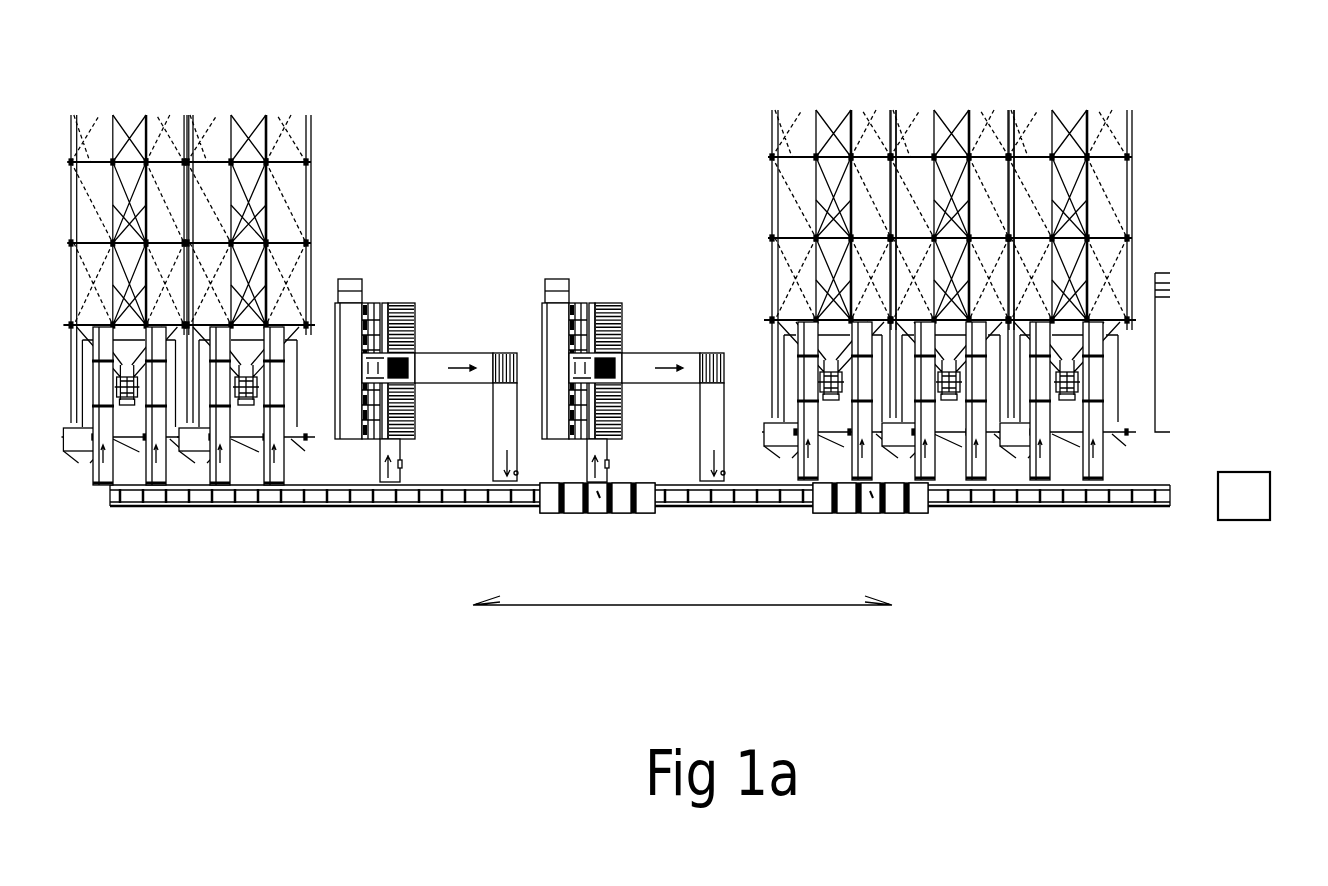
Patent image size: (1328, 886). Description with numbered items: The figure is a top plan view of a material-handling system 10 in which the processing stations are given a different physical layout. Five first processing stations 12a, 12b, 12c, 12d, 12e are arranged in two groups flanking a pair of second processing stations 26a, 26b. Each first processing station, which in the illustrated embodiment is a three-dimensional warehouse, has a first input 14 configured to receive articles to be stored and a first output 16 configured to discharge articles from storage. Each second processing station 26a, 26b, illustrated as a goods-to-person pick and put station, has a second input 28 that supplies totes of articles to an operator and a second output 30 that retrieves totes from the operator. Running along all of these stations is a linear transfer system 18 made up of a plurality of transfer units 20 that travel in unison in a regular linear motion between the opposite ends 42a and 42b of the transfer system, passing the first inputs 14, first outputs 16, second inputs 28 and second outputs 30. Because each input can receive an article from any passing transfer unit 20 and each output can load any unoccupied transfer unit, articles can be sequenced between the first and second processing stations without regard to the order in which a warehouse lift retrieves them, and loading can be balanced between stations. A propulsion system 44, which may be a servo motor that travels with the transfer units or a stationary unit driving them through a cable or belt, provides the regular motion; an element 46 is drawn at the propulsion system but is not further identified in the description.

The material-handling system 10 is at (660, 68).
The first processing station 12a is at (831, 254).
The first processing station 12b is at (949, 254).
The first processing station 12c is at (1084, 256).
The first processing station 12d is at (246, 270).
The first processing station 12e is at (127, 262).
The first input 14 is at (798, 461).
The first output 16 is at (866, 458).
The linear transfer system 18 is at (780, 512).
The transfer unit 20 is at (552, 514).
The second processing station 26a is at (571, 272).
The second processing station 26b is at (364, 272).
The second input 28 is at (402, 460).
The second output 30 is at (518, 458).
The end of linear transfer system 42a is at (101, 518).
The end of linear transfer system 42b is at (1176, 522).
The propulsion system 44 is at (1264, 530).
The motor 46 is at (1228, 472).